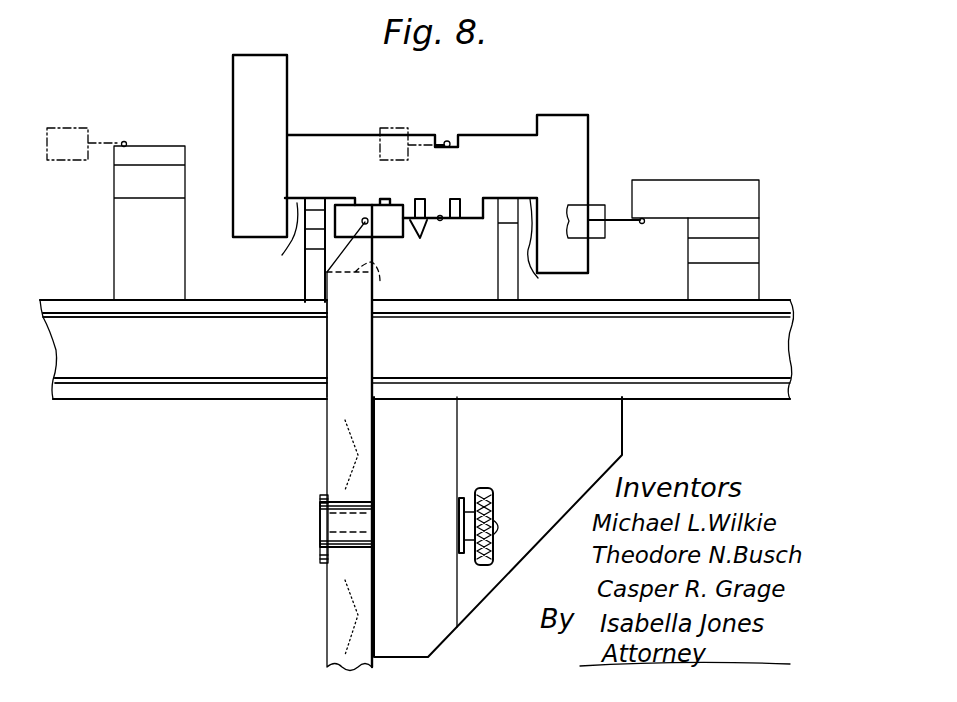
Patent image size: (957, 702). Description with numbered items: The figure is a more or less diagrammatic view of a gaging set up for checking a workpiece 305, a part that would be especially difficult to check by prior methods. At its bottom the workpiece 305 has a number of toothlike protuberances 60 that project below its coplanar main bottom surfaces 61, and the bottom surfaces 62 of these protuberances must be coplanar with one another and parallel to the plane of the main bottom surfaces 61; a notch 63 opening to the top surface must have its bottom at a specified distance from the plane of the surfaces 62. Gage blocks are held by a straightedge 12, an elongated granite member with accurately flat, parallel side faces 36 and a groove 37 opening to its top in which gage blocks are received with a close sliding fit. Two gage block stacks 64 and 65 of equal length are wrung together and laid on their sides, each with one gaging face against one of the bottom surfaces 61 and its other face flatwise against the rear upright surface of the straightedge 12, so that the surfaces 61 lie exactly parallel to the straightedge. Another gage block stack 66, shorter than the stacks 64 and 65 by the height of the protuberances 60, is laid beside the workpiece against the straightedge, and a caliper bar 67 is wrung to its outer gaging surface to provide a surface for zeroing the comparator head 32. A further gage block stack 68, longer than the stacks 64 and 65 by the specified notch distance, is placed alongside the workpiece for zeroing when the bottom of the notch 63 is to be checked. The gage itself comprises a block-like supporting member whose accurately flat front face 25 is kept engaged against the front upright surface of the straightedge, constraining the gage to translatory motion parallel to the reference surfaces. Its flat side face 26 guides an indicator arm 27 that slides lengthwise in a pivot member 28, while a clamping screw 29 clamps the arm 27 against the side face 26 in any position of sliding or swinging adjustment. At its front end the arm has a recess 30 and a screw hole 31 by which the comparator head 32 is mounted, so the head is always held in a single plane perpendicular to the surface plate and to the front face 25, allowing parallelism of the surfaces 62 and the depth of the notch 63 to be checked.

The straightedge 12 is at (183, 387).
The front face 25 is at (420, 395).
The side face 26 is at (370, 460).
The indicator arm 27 is at (340, 423).
The pivot member 28 is at (322, 530).
The clamping screw 29 is at (488, 488).
The recess 30 is at (379, 284).
The screw hole 31 is at (365, 218).
The comparator head 32 is at (392, 237).
The side faces 36 is at (195, 305).
The groove 37 is at (235, 356).
The toothlike protuberances 60 is at (376, 200).
The main bottom surfaces 61 is at (290, 235).
The bottom surfaces of protuberances 62 is at (418, 225).
The notch 63 is at (455, 147).
The gage block stack 64 is at (313, 271).
The gage block stack 65 is at (502, 272).
The gage block stack 66 is at (712, 258).
The caliper bar 67 is at (716, 155).
The gage block stack 68 is at (127, 217).
The workpiece 305 is at (575, 123).